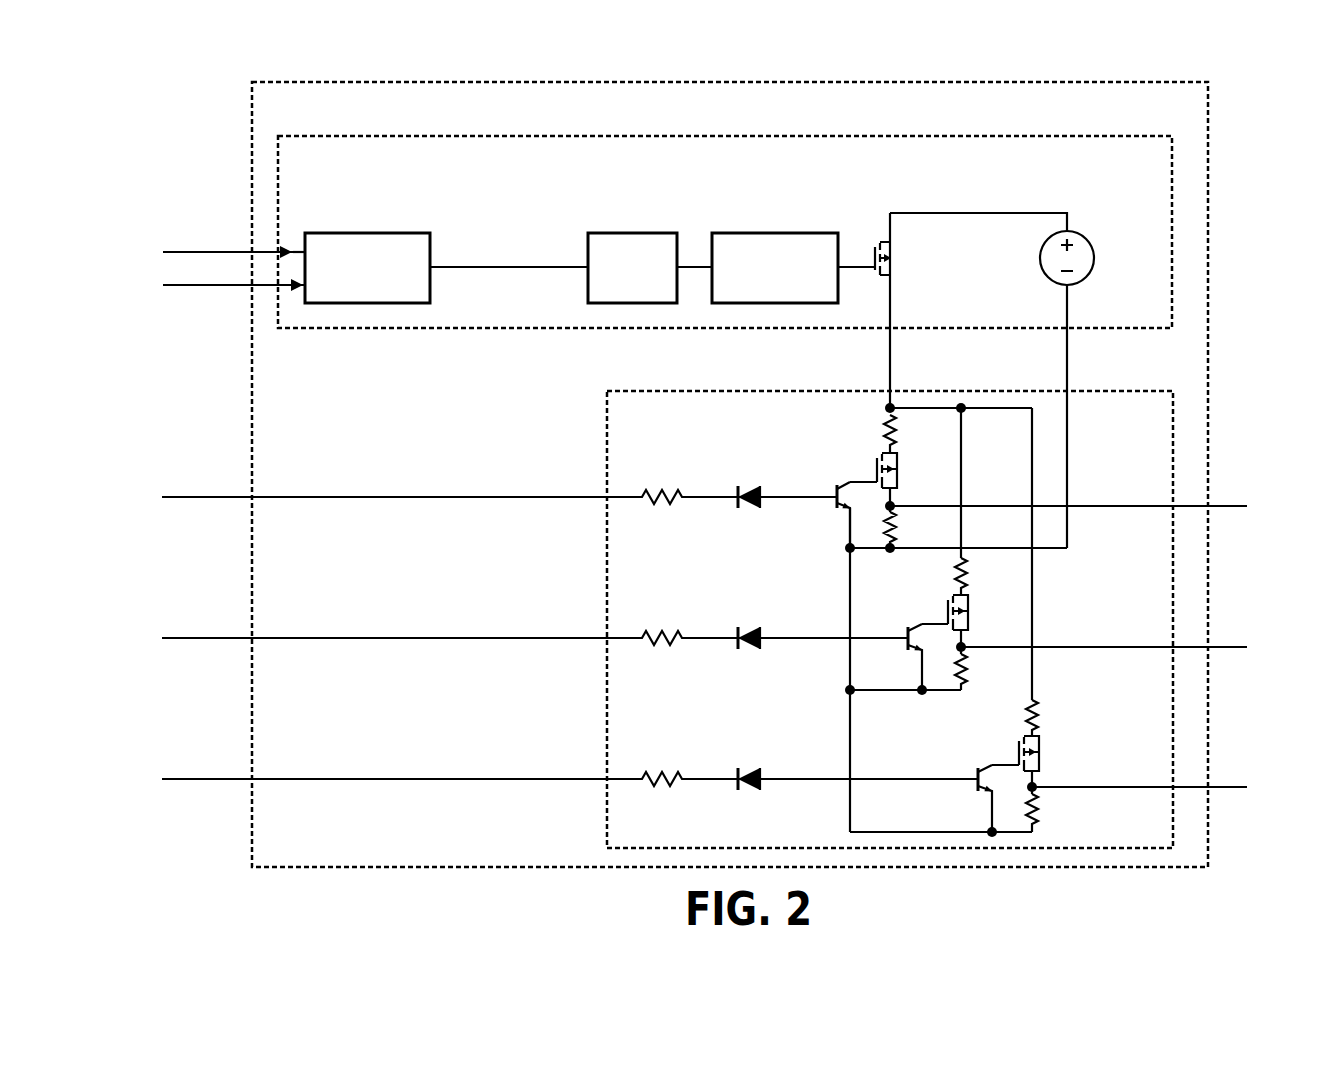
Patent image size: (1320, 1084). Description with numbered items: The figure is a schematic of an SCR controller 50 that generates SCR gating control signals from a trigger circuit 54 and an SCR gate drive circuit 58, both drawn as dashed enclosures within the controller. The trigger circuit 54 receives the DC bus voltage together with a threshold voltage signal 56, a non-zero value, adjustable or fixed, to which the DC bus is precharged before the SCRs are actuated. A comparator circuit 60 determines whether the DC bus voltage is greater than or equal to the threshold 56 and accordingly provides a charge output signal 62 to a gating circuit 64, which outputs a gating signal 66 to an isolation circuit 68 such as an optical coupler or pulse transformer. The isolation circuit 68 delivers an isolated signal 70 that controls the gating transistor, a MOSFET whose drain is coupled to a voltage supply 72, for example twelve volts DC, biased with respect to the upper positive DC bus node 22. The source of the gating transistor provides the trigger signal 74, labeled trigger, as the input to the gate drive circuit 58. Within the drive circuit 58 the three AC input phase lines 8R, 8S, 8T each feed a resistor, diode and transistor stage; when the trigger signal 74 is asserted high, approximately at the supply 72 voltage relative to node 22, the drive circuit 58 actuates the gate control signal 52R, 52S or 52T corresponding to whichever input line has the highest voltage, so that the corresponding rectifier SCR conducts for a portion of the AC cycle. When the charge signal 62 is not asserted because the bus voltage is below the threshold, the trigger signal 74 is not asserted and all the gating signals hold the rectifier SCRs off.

The SCR controller 50 is at (252, 110).
The trigger circuit 54 is at (278, 155).
The SCR gate drive circuit 58 is at (701, 391).
The upper DC bus node 22 is at (182, 251).
The threshold voltage signal 56 is at (186, 287).
The comparator circuit 60 is at (367, 233).
The CHARGE output signal 62 is at (558, 267).
The gating circuit 64 is at (633, 233).
The gating signal 66 is at (703, 267).
The isolation circuit 68 is at (773, 233).
The isolated signal 70 is at (862, 262).
The voltage supply 72 is at (1040, 258).
The trigger signal 74 is at (890, 366).
The input phase line R 8R is at (217, 497).
The input phase line S 8S is at (218, 638).
The input phase line T 8T is at (218, 779).
The gate control signal GCR 52R is at (1155, 505).
The gate control signal GCS 52S is at (1157, 645).
The gate control signal GCT 52T is at (1155, 785).